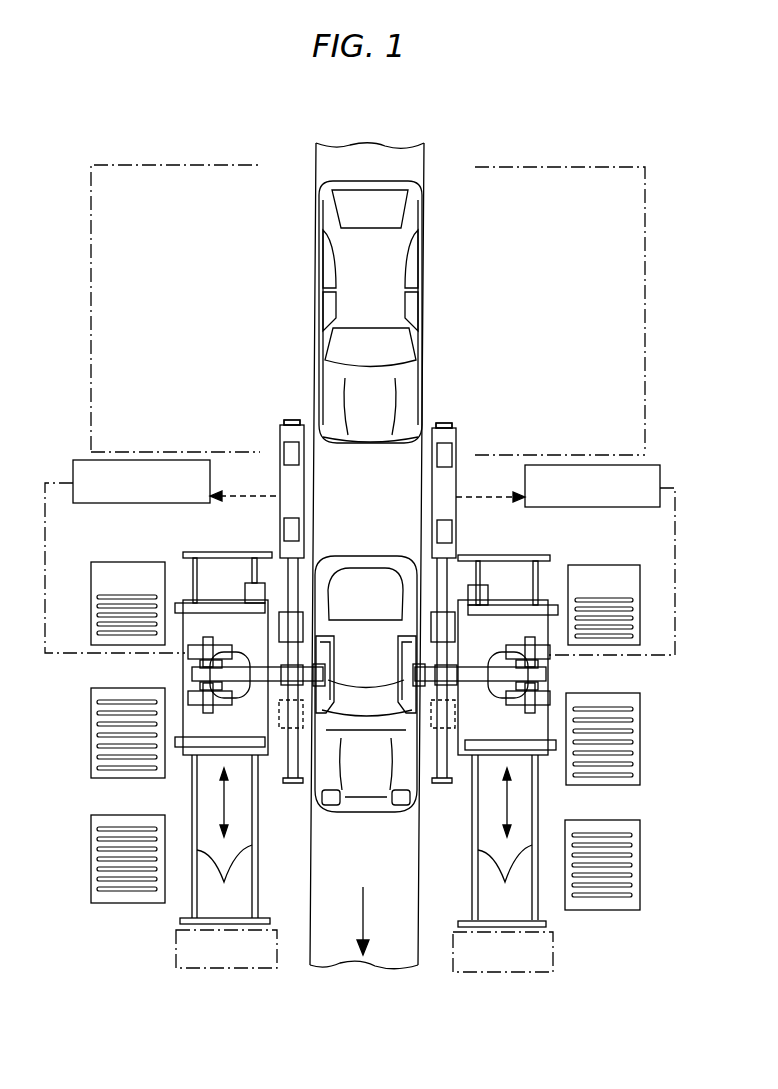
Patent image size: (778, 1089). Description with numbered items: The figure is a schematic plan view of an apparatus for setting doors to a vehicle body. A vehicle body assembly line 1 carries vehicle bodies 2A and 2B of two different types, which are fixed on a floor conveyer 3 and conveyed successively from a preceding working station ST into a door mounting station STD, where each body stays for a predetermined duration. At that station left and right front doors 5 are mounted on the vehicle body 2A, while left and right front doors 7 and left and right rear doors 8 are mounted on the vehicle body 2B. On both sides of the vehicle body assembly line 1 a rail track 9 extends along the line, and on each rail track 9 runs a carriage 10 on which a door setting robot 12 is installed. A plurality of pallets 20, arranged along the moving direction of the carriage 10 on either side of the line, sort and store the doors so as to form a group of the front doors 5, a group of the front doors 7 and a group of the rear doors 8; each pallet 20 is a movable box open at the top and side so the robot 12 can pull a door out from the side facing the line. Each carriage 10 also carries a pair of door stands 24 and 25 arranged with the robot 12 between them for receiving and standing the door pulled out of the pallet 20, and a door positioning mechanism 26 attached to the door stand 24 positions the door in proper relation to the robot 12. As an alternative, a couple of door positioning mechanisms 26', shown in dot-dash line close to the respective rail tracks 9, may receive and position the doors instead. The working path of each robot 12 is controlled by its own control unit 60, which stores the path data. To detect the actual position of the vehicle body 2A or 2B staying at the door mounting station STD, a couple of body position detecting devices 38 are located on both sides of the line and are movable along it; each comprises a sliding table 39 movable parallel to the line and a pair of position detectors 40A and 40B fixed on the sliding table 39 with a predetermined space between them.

The vehicle body assembly line 1 is at (426, 900).
The vehicle body 2A is at (363, 818).
The vehicle body 2B is at (375, 450).
The floor conveyer 3 is at (418, 815).
The front door 5 is at (100, 596).
The front door 7 is at (100, 702).
The rear door 8 is at (100, 830).
The rail track 9 is at (363, 841).
The carriage 10 is at (268, 760).
The robot 12 is at (188, 669).
The pallet 20 is at (362, 713).
The door stand 24 is at (180, 605).
The door stand 25 is at (378, 660).
The door positioning mechanism 26 is at (379, 556).
The door positioning mechanism 26' is at (341, 975).
The body position detecting device 38 is at (278, 478).
The sliding table 39 is at (288, 420).
The position detector 40A is at (292, 455).
The position detector 40B is at (293, 530).
The control unit 60 is at (133, 460).
The preceding working station ST is at (549, 165).
The door mounting station STD is at (586, 965).